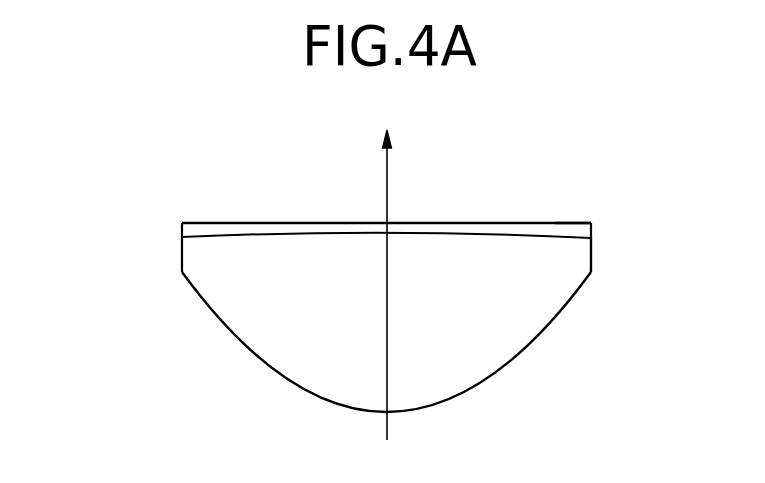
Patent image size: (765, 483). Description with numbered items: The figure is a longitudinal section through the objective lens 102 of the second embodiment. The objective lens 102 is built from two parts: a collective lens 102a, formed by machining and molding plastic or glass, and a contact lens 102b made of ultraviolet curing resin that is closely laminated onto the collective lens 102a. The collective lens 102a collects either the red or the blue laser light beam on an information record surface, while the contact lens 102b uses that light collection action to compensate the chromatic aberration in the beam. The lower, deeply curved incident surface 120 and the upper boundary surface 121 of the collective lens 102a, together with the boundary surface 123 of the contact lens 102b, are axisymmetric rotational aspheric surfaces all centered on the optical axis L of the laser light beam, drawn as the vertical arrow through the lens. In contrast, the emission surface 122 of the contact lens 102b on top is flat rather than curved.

The objective lens 102 is at (367, 286).
The collective lens 102a is at (195, 265).
The contact lens 102b is at (208, 228).
The incident surface 120 is at (467, 395).
The boundary surface 121 is at (573, 236).
The emission surface 122 is at (557, 222).
The boundary surface 123 is at (552, 237).
The optical axis L is at (387, 182).